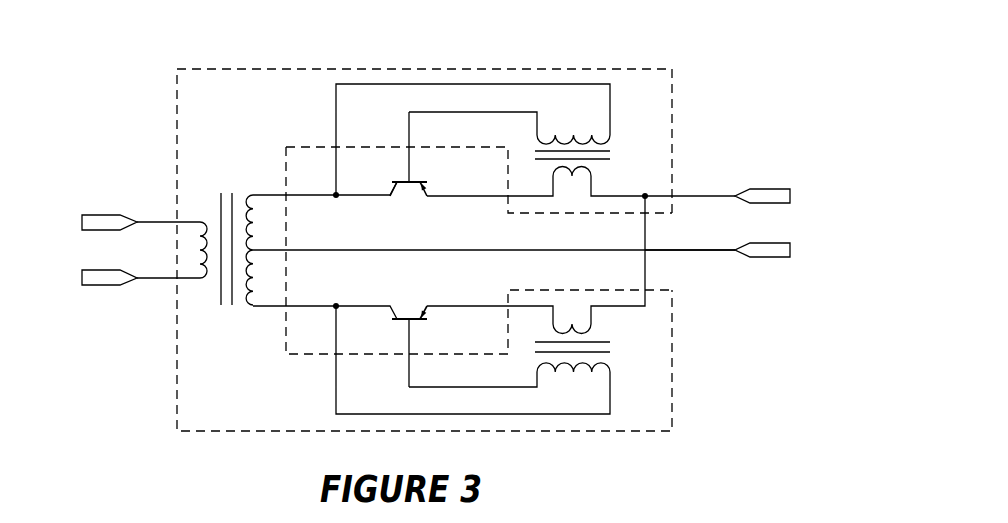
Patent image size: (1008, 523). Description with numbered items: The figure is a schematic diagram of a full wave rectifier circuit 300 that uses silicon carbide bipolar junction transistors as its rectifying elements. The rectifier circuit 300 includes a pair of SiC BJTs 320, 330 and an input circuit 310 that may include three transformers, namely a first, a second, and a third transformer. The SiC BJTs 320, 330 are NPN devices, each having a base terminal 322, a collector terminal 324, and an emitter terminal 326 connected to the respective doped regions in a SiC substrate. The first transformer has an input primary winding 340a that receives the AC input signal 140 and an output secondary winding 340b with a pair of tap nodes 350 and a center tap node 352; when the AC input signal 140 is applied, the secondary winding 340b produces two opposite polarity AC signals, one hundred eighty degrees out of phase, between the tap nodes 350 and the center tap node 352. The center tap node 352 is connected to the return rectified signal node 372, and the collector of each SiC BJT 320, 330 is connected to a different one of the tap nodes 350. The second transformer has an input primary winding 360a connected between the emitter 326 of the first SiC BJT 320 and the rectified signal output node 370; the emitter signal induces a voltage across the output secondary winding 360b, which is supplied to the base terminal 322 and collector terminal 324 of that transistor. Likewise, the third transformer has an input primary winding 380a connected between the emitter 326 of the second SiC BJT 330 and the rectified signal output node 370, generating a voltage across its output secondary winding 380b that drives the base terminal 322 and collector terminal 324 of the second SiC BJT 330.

The full wave rectifier circuit 300 is at (552, 43).
The input circuit 310 is at (376, 69).
The AC input signal 140 is at (81, 250).
The SiC BJT 320 is at (499, 192).
The base terminal 322 is at (409, 170).
The collector terminal 324 is at (395, 200).
The emitter terminal 326 is at (426, 198).
The SiC BJT 330 is at (494, 351).
The input primary winding 340a is at (205, 265).
The output secondary winding 340b is at (248, 305).
The tap nodes 350 is at (262, 194).
The center tap node 352 is at (268, 250).
The input primary winding 360a is at (566, 170).
The output secondary winding 360b is at (596, 137).
The rectified signal output node 370 is at (683, 196).
The return rectified signal node 372 is at (685, 252).
The input primary winding 380a is at (578, 332).
The output secondary winding 380b is at (552, 362).